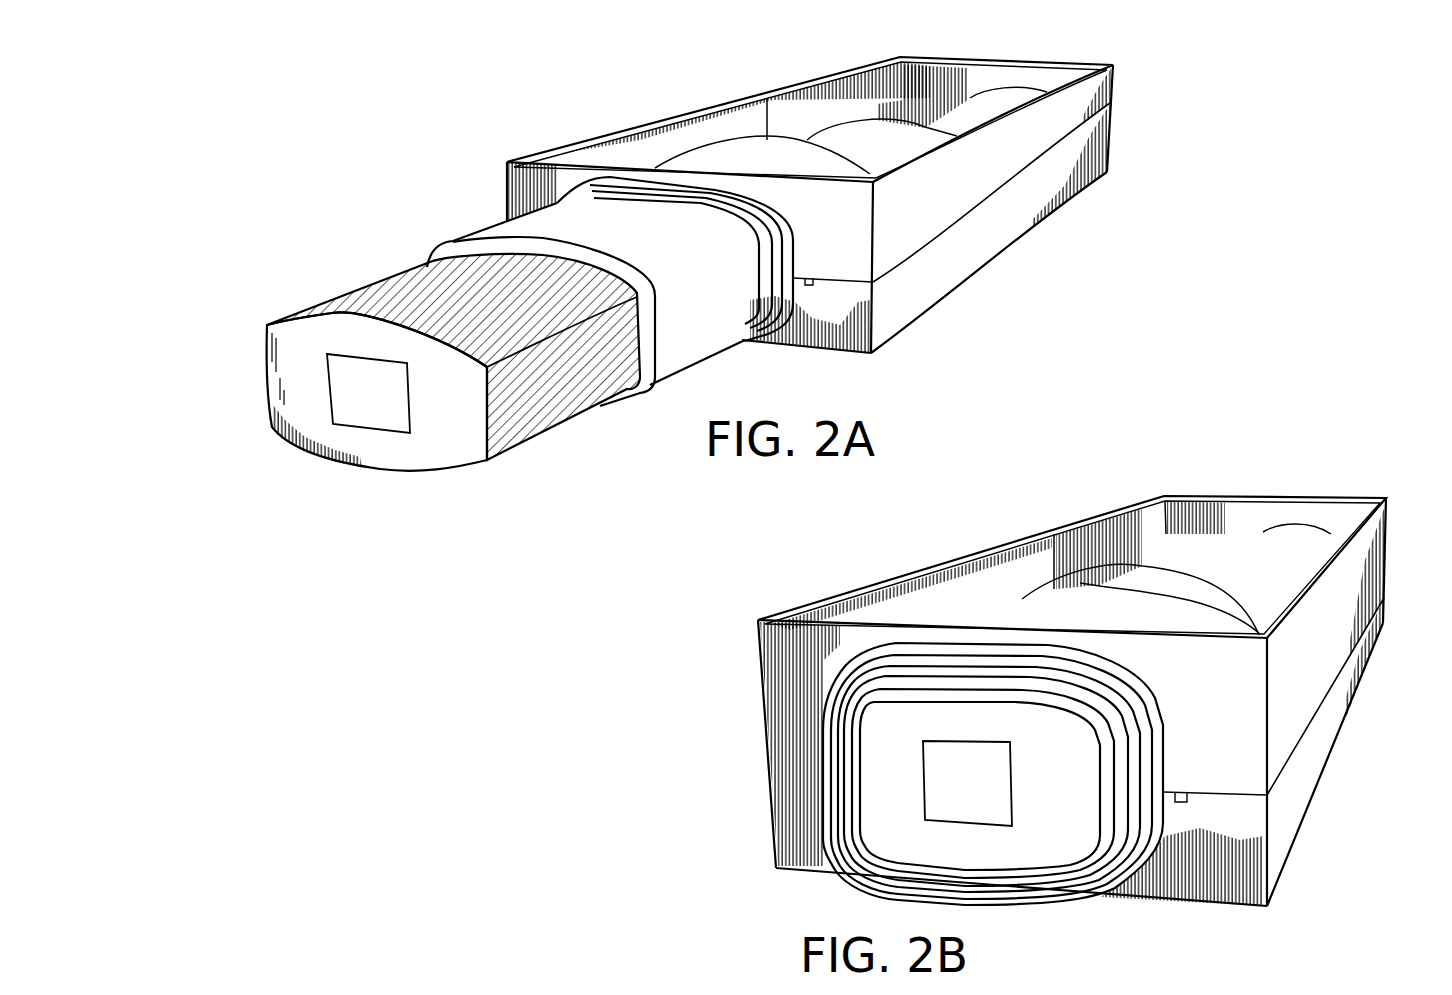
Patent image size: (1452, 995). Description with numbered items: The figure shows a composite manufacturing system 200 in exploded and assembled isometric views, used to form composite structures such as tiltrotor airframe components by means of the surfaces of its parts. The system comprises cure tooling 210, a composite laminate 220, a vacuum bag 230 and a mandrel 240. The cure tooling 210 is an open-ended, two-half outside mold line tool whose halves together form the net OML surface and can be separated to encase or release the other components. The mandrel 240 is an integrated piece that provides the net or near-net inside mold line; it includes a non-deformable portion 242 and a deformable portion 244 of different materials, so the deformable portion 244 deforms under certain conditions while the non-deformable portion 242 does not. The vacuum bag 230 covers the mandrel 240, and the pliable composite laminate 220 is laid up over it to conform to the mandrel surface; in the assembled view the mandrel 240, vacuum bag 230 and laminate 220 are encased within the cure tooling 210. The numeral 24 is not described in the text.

In FIG. 2A, the composite manufacturing system 200 is at (776, 317).
In FIG. 2A, the cure tooling 210 is at (943, 258).
In FIG. 2B, the cure tooling 210 is at (1297, 773).
In FIG. 2A, the composite laminate 220 is at (482, 336).
In FIG. 2B, the composite laminate 220 is at (928, 739).
In FIG. 2A, the vacuum bag 230 is at (550, 375).
In FIG. 2B, the vacuum bag 230 is at (1100, 863).
In FIG. 2A, the mandrel 240 is at (352, 445).
In FIG. 2A, the non-deformable portion 242 is at (383, 407).
In FIG. 2B, the non-deformable portion 242 is at (958, 760).
In FIG. 2A, the deformable portion 244 is at (448, 443).
In FIG. 2B, the deformable portion 244 is at (888, 732).
In FIG. 2B, the connector face 24 is at (872, 699).